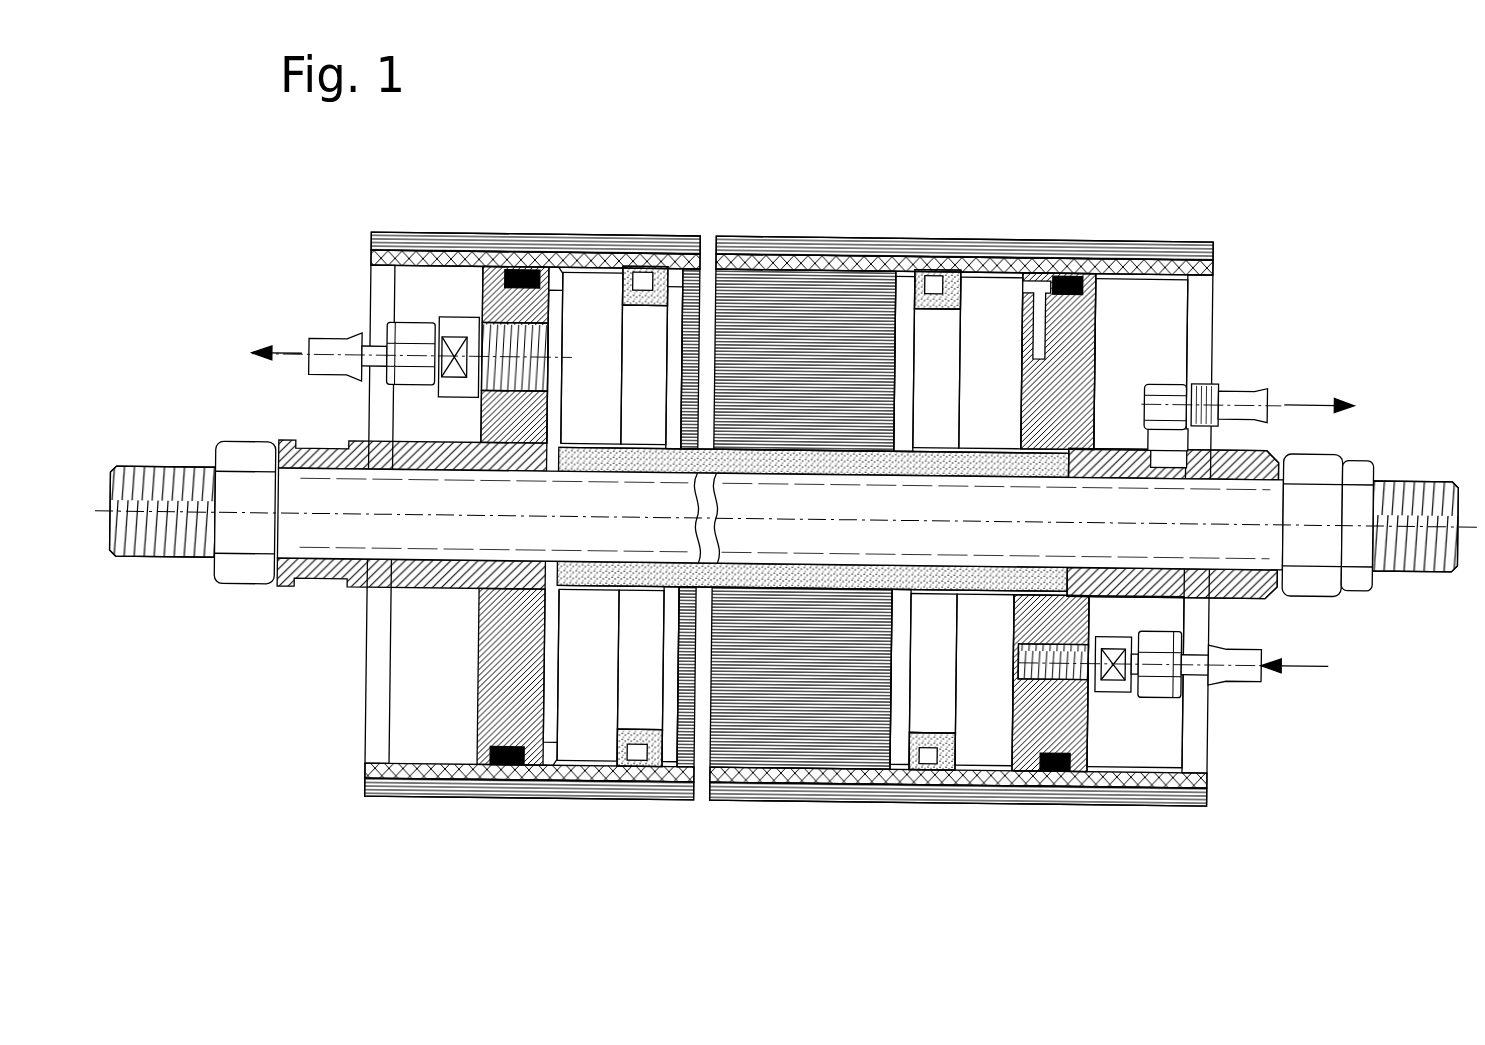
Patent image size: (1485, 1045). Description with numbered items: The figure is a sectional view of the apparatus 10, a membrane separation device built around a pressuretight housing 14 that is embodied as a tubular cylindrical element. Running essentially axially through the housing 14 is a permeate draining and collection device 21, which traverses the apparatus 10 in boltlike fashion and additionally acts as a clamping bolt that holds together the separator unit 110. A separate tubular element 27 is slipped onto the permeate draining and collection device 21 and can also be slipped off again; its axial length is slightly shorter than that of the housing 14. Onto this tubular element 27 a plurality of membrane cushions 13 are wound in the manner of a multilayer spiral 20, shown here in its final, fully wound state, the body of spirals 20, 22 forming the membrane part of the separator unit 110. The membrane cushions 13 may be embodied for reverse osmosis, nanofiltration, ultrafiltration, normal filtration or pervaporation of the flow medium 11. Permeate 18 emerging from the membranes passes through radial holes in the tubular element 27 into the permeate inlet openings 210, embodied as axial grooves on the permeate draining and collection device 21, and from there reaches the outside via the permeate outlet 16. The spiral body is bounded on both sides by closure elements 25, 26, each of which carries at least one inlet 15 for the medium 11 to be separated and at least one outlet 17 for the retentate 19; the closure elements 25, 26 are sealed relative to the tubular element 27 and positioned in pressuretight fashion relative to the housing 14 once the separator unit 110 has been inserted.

The apparatus 10 is at (1148, 188).
The flow medium 11 is at (1297, 656).
The membrane cushions 13 is at (903, 732).
The pressuretight housing 14 is at (1210, 232).
The inlet 15 is at (1118, 682).
The permeate outlet 16 is at (1197, 361).
The outlet 17 is at (453, 323).
The permeate 18 is at (1300, 380).
The retentate 19 is at (298, 350).
The multilayer spiral 20 is at (765, 792).
The permeate draining and collection device 21 is at (1180, 486).
The multi-element spiral 22 is at (785, 835).
The closure element 25 is at (1067, 716).
The closure element 26 is at (497, 721).
The separate tubular element 27 is at (985, 440).
The separator unit 110 is at (960, 196).
The permeate inlet openings 210 is at (1178, 572).